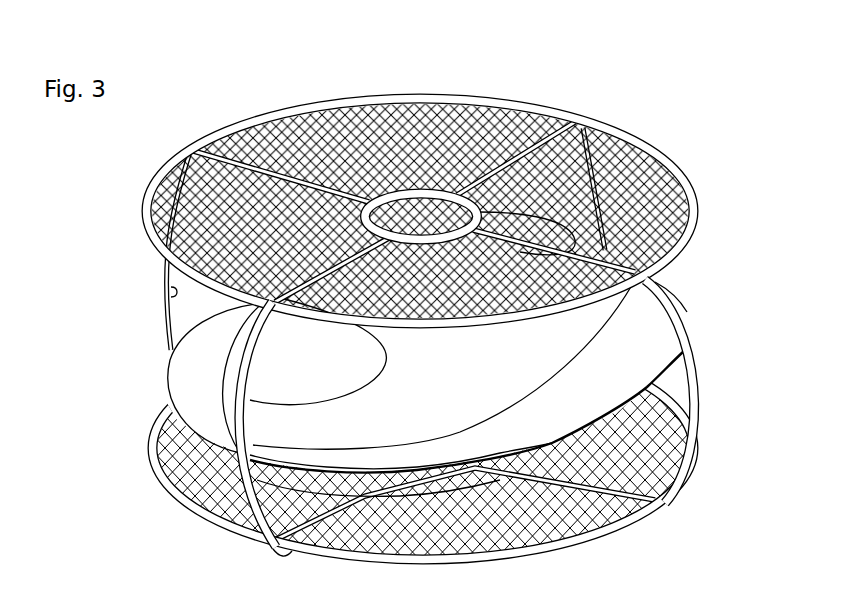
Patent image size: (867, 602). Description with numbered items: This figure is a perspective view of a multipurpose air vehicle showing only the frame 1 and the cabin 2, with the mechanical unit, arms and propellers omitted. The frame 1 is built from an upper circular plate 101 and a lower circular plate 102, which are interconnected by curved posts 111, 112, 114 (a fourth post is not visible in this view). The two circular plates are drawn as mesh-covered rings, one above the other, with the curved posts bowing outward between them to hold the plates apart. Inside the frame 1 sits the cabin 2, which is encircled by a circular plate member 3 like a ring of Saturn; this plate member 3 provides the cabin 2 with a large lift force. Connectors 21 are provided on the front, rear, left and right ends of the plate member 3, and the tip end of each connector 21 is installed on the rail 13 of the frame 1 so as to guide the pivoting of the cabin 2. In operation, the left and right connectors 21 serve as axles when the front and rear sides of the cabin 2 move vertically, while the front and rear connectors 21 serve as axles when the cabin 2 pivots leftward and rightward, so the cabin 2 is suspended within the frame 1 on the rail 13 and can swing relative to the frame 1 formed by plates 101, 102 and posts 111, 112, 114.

The frame 1 is at (728, 274).
The cabin 2 is at (558, 360).
The circular plate member 3 is at (182, 388).
The rail 13 is at (168, 304).
The connector 21 is at (168, 343).
The upper circular plate 101 is at (512, 99).
The lower circular plate 102 is at (590, 544).
The curved post 111 is at (703, 380).
The curved post 112 is at (608, 167).
The curved post 114 is at (258, 530).